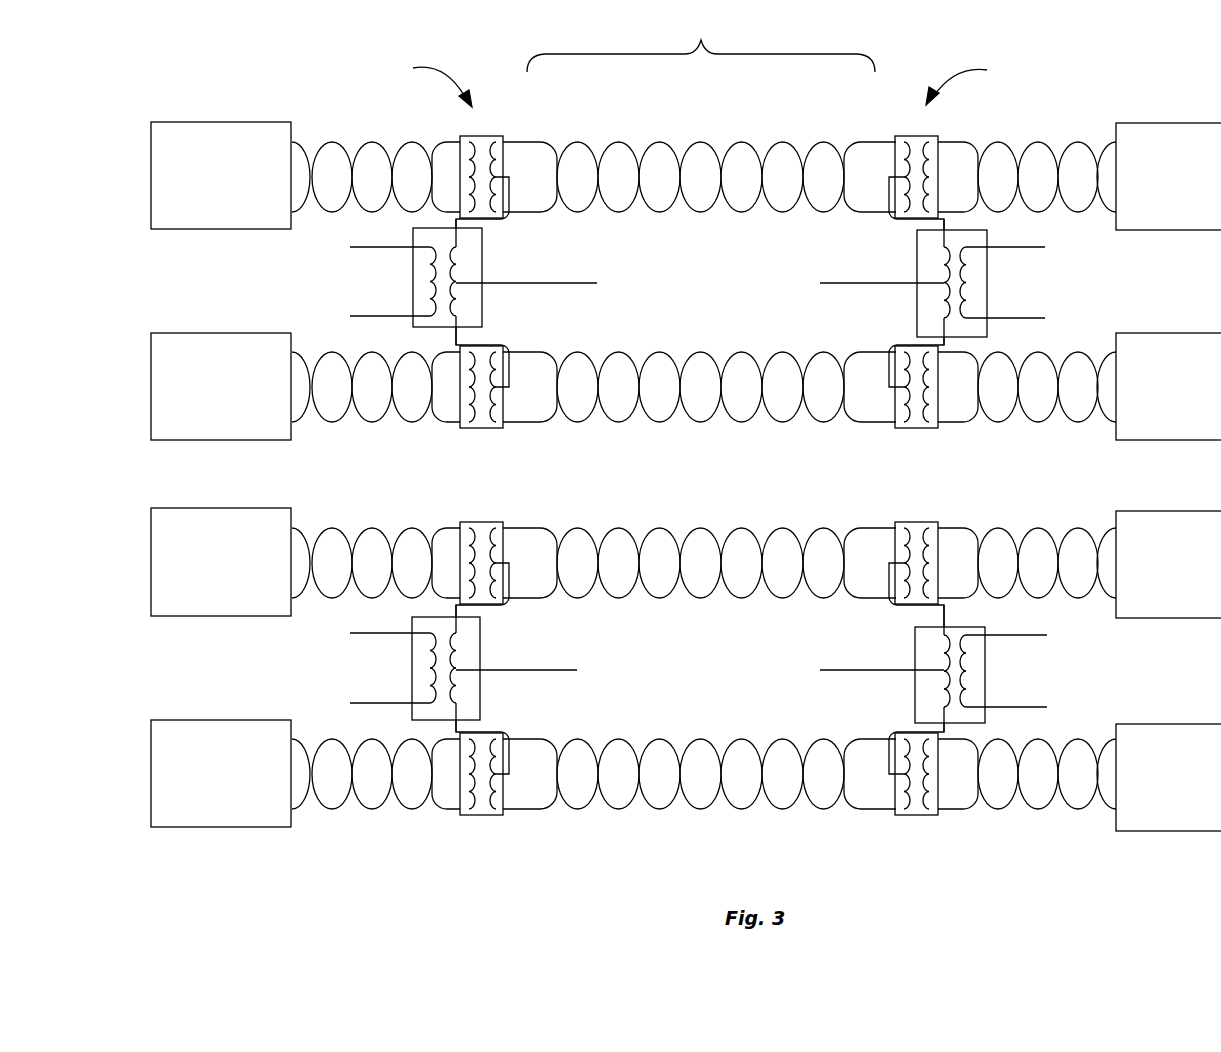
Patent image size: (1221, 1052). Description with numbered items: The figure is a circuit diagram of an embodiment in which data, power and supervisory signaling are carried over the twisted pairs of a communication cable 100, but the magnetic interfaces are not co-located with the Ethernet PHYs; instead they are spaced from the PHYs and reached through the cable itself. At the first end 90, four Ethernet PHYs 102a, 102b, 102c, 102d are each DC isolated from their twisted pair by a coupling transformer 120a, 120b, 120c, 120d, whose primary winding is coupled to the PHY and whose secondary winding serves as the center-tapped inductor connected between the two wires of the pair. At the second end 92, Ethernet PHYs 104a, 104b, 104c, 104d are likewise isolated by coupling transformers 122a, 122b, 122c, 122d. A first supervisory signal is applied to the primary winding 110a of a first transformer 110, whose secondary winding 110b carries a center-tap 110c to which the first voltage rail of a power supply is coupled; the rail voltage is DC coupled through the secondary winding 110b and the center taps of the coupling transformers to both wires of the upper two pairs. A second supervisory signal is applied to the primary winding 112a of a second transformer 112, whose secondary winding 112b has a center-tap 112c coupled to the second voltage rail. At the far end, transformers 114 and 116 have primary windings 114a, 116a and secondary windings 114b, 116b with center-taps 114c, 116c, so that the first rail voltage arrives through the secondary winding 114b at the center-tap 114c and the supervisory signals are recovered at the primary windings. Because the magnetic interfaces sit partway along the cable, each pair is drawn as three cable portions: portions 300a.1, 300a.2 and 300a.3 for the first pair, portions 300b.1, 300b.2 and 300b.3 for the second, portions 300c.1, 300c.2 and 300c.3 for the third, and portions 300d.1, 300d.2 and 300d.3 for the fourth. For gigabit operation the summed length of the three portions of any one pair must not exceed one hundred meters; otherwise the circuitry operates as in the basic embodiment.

The cable 100 is at (701, 43).
The first end 90 is at (424, 83).
The second end 92 is at (975, 83).
The Ethernet PHY 102a is at (221, 175).
The Ethernet PHY 102b is at (221, 386).
The Ethernet PHY 102c is at (221, 562).
The Ethernet PHY 102d is at (221, 773).
The Ethernet PHY 104a is at (1168, 176).
The Ethernet PHY 104b is at (1168, 386).
The Ethernet PHY 104c is at (1168, 564).
The Ethernet PHY 104d is at (1168, 777).
The first transformer 110 is at (449, 281).
The primary winding 110a is at (428, 276).
The secondary winding 110b is at (468, 266).
The center-tap 110c is at (510, 283).
The second transformer 112 is at (430, 668).
The primary winding 112a is at (428, 668).
The secondary winding 112b is at (465, 656).
The center-tap 112c is at (508, 670).
The transformer 114 is at (963, 281).
The primary winding 114a is at (972, 279).
The secondary winding 114b is at (935, 268).
The center-tap 114c is at (917, 246).
The transformer 116 is at (965, 668).
The primary winding 116a is at (972, 666).
The secondary winding 116b is at (932, 658).
The center-tap 116c is at (917, 634).
The coupling transformer 120a is at (490, 134).
The coupling transformer 120b is at (478, 430).
The coupling transformer 120c is at (478, 523).
The coupling transformer 120d is at (478, 817).
The coupling transformer 122a is at (933, 137).
The coupling transformer 122b is at (933, 431).
The coupling transformer 122c is at (925, 523).
The coupling transformer 122d is at (925, 818).
The cable portion 300a.1 is at (372, 140).
The cable portion 300a.2 is at (626, 142).
The cable portion 300a.3 is at (1078, 141).
The cable portion 300b.1 is at (410, 352).
The cable portion 300b.2 is at (626, 352).
The cable portion 300b.3 is at (1085, 353).
The cable portion 300c.1 is at (410, 528).
The cable portion 300c.2 is at (626, 528).
The cable portion 300c.3 is at (1082, 530).
The cable portion 300d.1 is at (408, 740).
The cable portion 300d.2 is at (626, 740).
The cable portion 300d.3 is at (1085, 742).